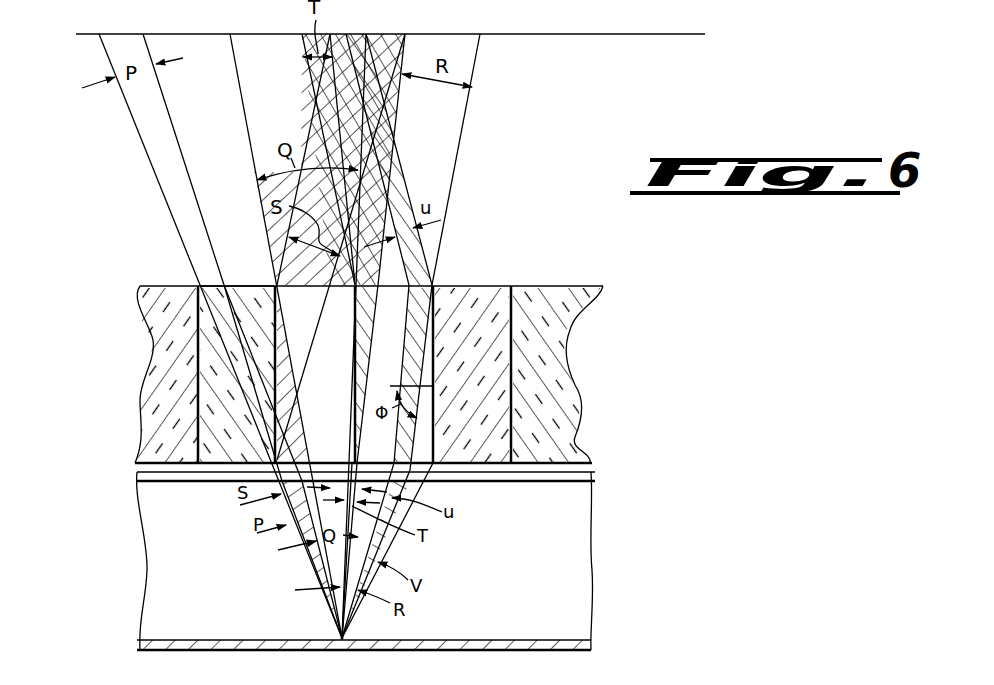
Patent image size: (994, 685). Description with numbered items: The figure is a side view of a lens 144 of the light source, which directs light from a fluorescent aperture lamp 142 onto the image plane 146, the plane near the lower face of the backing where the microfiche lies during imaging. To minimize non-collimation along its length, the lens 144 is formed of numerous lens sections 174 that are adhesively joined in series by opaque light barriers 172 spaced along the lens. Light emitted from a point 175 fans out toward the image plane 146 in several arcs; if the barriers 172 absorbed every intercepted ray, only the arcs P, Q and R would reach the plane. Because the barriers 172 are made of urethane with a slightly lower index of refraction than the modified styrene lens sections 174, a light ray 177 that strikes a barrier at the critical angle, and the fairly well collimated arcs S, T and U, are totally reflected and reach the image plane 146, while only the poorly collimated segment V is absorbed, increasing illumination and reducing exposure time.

The fluorescent aperture lamp 142 is at (568, 553).
The lens 144 is at (543, 392).
The image plane 146 is at (207, 33).
The light barrier 172 is at (275, 408).
The lens section 174 is at (240, 286).
The point 175 is at (342, 640).
The light ray 177 is at (420, 437).